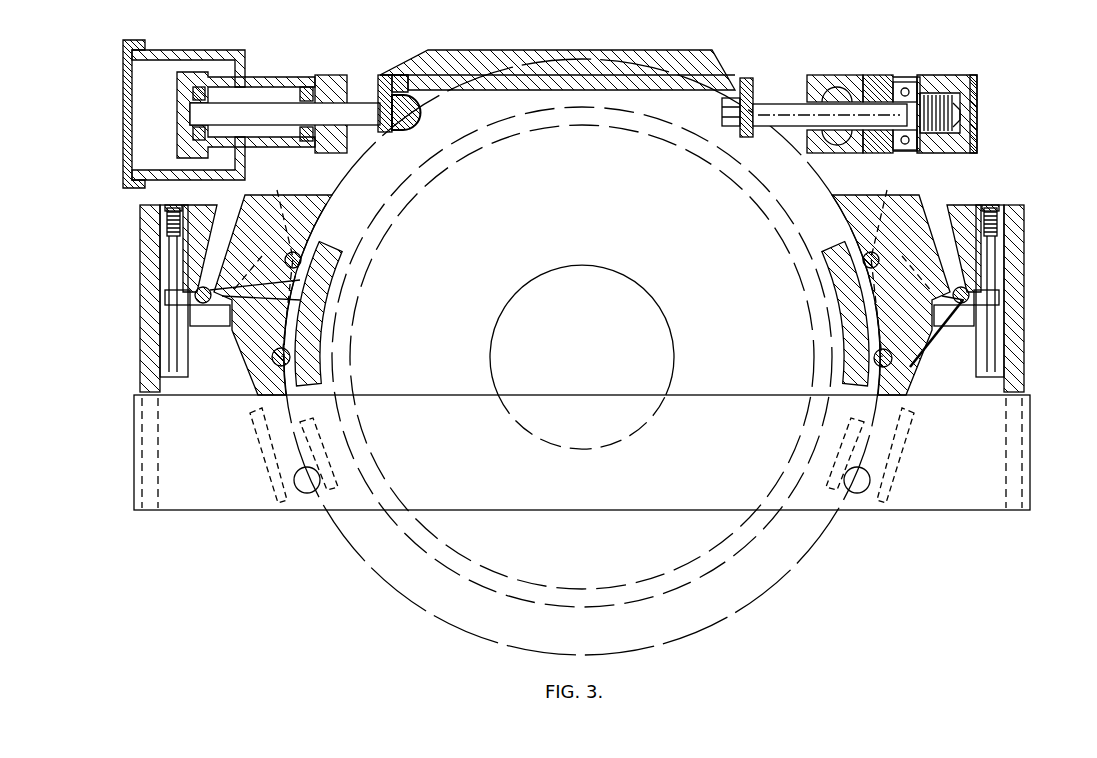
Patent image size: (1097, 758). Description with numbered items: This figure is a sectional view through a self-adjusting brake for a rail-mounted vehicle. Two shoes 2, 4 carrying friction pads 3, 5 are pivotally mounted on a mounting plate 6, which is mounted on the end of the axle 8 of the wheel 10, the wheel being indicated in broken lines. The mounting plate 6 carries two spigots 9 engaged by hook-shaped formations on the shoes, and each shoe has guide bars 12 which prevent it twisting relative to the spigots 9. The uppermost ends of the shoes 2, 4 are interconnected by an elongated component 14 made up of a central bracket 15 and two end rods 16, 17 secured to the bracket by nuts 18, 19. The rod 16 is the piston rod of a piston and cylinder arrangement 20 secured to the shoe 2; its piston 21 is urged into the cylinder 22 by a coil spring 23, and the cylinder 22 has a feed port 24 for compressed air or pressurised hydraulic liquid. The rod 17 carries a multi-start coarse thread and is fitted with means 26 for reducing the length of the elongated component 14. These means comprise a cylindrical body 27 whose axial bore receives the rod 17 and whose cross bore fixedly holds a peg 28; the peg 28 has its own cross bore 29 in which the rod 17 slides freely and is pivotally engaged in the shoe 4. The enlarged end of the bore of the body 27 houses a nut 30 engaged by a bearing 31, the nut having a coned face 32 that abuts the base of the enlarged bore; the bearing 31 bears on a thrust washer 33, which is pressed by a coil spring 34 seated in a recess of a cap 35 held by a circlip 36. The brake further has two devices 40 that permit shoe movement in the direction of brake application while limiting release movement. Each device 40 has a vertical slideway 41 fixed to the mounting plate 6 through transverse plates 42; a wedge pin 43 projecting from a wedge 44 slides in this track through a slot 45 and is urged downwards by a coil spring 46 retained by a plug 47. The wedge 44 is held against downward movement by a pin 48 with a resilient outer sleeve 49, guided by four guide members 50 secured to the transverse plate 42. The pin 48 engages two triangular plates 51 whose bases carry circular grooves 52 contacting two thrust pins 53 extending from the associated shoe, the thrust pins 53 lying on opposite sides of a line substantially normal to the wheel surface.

The shoe 2 is at (250, 215).
The friction pad 3 is at (333, 253).
The shoe 4 is at (897, 207).
The friction pad 5 is at (847, 377).
The mounting plate 6 is at (967, 492).
The axle 8 is at (575, 354).
The spigot 9 is at (307, 482).
The wheel 10 is at (786, 582).
The guide bar 12 is at (317, 442).
The elongated component 14 is at (930, 103).
The central bracket 15 is at (508, 63).
The end rod 16 is at (363, 110).
The end rod 17 is at (783, 113).
The nut 18 is at (398, 108).
The nut 19 is at (722, 112).
The piston and cylinder arrangement 20 is at (218, 98).
The piston 21 is at (205, 75).
The cylinder 22 is at (160, 55).
The coil spring 23 is at (300, 90).
The feed port 24 is at (126, 80).
The means for reducing the length of the elongated component 26 is at (920, 103).
The cylindrical body 27 is at (838, 105).
The peg 28 is at (866, 107).
The cross bore 29 is at (840, 107).
The nut 30 is at (862, 152).
The bearing 31 is at (900, 143).
The coned face 32 is at (907, 82).
The thrust washer 33 is at (940, 77).
The coil spring 34 is at (953, 98).
The cap 35 is at (977, 127).
The circlip 36 is at (977, 147).
The device 40 is at (577, 285).
The vertical slideway 41 is at (160, 360).
The transverse plate 42 is at (152, 252).
The wedge pin 43 is at (186, 296).
The wedge 44 is at (198, 208).
The slot 45 is at (178, 280).
The coil spring 46 is at (165, 221).
The plug 47 is at (178, 207).
The pin 48 is at (300, 280).
The resilient outer sleeve 49 is at (300, 300).
The guide member 50 is at (205, 289).
The triangular plate 51 is at (205, 318).
The circular groove 52 is at (943, 382).
The thrust pin 53 is at (299, 260).